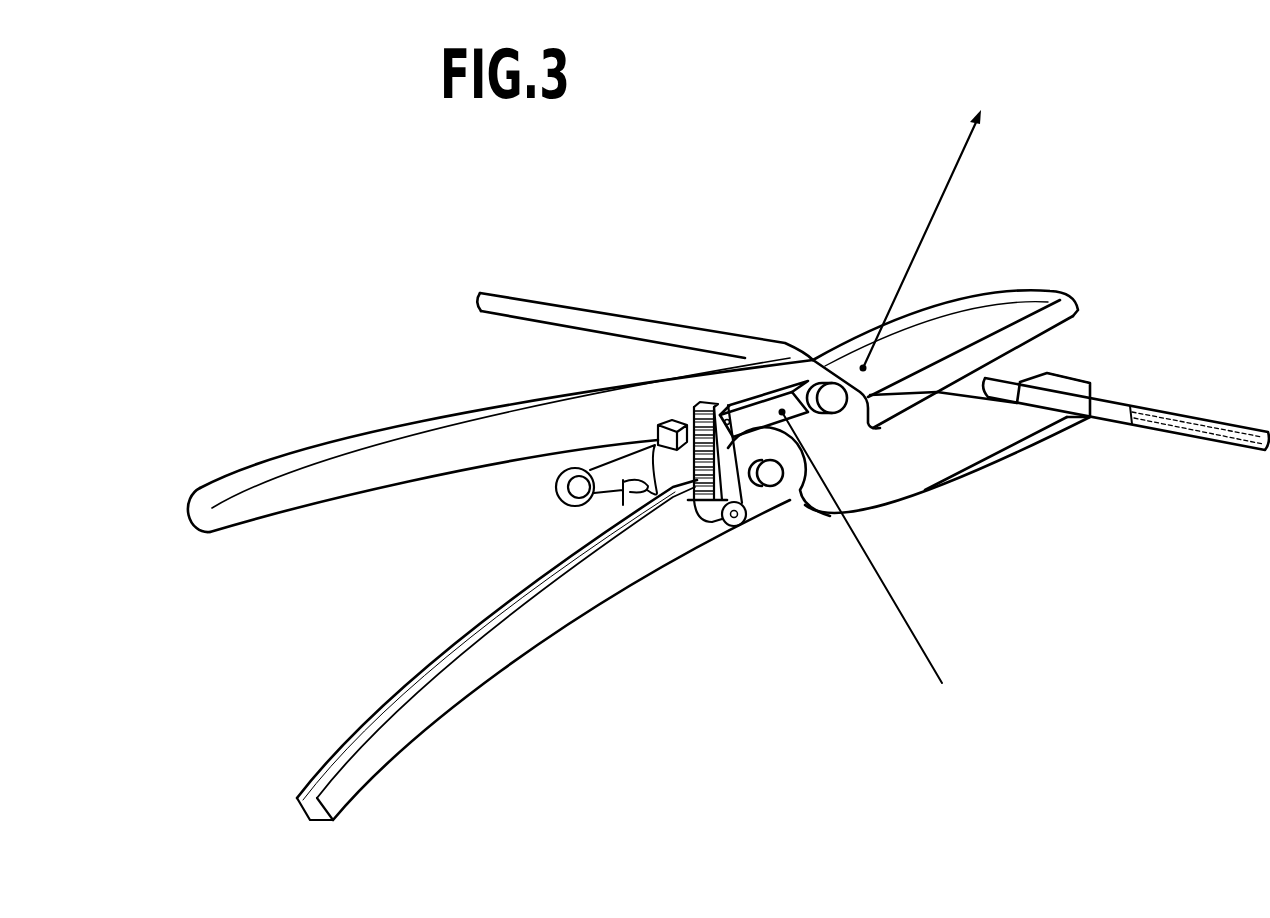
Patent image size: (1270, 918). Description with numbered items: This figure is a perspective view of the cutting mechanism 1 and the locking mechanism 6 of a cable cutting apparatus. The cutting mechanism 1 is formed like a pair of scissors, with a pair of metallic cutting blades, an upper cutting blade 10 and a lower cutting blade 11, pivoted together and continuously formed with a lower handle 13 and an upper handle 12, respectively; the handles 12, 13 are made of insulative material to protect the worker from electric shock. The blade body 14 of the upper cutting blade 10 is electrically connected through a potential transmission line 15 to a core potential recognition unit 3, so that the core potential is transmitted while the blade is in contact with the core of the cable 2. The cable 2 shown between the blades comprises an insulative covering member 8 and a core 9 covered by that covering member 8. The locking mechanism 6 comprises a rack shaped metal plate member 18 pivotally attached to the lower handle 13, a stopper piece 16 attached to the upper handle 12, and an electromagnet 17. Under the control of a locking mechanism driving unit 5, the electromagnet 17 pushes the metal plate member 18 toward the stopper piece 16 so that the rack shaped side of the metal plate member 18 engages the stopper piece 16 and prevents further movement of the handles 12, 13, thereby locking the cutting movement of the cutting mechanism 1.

The cutting mechanism 1 is at (1056, 258).
The cable 2 is at (538, 295).
The core potential recognition unit 3 is at (976, 90).
The locking mechanism driving unit 5 is at (901, 570).
The locking mechanism 6 is at (722, 398).
The insulative covering member 8 is at (1203, 428).
The core 9 is at (1183, 424).
The upper cutting blade 10 is at (1047, 320).
The lower cutting blade 11 is at (942, 407).
The upper handle 12 is at (317, 467).
The lower handle 13 is at (522, 640).
The blade body 14 is at (987, 313).
The potential transmission line 15 is at (937, 203).
The stopper piece 16 is at (655, 433).
The electromagnet 17 is at (768, 397).
The rack shaped metal plate member 18 is at (710, 525).